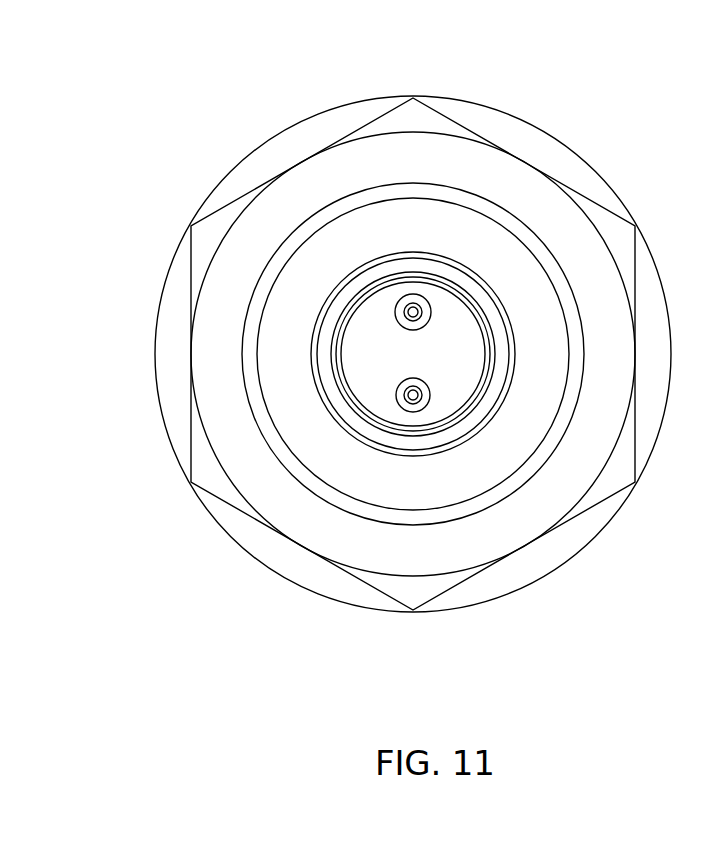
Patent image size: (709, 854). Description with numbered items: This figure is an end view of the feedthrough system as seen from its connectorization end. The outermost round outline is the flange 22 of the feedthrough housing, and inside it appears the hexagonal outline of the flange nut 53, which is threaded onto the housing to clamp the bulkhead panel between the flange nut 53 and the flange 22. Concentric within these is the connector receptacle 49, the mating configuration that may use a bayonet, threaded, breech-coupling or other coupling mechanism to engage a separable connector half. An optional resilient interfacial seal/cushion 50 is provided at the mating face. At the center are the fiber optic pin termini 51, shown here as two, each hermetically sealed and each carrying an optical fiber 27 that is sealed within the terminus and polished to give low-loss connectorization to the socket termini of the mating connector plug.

The flange 22 is at (414, 364).
The optical fiber 27 is at (349, 212).
The connector receptacle 49 is at (436, 237).
The resilient interfacial seal/cushion 50 is at (401, 334).
The fiber optic pin termini 51 is at (544, 240).
The flange nut 53 is at (413, 388).